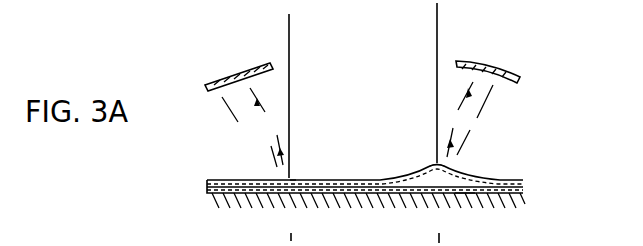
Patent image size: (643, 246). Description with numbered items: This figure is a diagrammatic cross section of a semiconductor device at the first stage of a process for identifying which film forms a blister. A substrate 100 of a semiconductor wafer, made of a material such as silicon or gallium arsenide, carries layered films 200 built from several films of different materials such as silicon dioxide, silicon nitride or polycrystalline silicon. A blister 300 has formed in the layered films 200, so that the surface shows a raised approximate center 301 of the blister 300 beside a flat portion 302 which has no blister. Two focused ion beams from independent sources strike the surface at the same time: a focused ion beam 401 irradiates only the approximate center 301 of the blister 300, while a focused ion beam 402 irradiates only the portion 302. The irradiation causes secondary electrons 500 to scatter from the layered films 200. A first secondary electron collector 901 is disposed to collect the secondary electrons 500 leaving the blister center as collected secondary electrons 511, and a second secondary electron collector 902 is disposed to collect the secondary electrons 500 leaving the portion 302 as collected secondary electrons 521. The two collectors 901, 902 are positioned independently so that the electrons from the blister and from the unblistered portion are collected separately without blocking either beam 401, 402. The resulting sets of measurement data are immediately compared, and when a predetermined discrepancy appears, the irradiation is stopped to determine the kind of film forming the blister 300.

The substrate 100 is at (217, 203).
The layered films 200 is at (536, 170).
The blister 300 is at (463, 194).
The approximate center of the blister 301 is at (432, 160).
The portion which has no blister 302 is at (296, 177).
The focused ion beam 401 is at (437, 21).
The focused ion beam 402 is at (289, 27).
The secondary electrons 500 is at (274, 157).
The collected secondary electrons 511 is at (486, 103).
The collected secondary electrons 521 is at (232, 119).
The first secondary electron collector 901 is at (504, 68).
The second secondary electron collector 902 is at (232, 68).